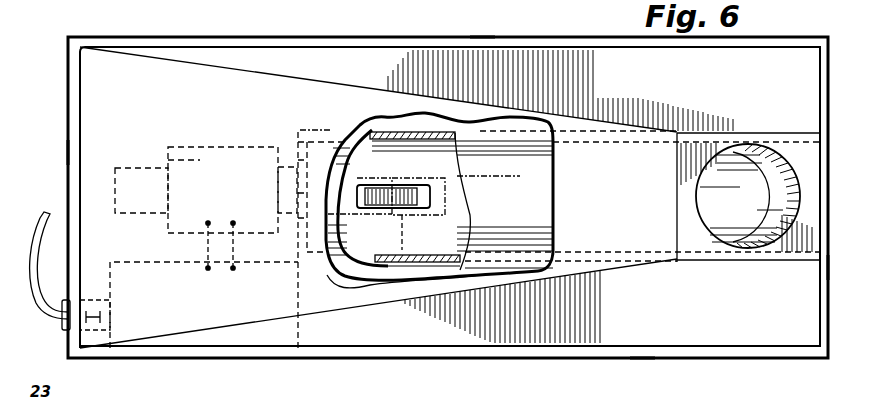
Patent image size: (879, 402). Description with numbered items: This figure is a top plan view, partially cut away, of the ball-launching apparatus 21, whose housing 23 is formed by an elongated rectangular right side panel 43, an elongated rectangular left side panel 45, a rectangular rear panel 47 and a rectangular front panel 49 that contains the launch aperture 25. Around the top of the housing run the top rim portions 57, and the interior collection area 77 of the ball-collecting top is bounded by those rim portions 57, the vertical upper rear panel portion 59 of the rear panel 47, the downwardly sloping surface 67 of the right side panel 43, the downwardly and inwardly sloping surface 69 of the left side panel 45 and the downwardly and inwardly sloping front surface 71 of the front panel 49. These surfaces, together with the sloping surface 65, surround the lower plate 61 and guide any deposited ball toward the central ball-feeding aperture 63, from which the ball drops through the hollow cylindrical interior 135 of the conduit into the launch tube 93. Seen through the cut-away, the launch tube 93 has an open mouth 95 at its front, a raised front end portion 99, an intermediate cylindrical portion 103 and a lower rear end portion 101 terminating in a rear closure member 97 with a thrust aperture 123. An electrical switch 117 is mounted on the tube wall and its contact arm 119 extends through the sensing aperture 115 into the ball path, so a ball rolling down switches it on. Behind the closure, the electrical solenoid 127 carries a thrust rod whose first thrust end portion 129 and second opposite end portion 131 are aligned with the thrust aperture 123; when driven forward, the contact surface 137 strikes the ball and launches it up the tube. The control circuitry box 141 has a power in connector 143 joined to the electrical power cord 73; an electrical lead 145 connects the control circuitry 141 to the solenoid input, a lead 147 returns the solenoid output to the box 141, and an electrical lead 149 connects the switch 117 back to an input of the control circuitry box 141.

The ball-launching apparatus 21 is at (58, 61).
The housing 23 is at (67, 130).
The launch aperture 25 is at (837, 237).
The right side panel 43 is at (481, 38).
The left side panel 45 is at (642, 357).
The rear panel 47 is at (68, 153).
The front panel 49 is at (828, 265).
The top rim portion 57 is at (166, 45).
The vertical upper rear panel portion 59 is at (81, 133).
The lower plate 61 is at (812, 133).
The ball-feeding aperture 63 is at (735, 174).
The sloping surface 65 is at (222, 115).
The downwardly sloping surface of right side panel 67 is at (623, 97).
The downwardly and inwardly sloping surface of left side panel 69 is at (618, 320).
The downwardly and inwardly sloping front surface 71 is at (820, 307).
The electrical power cord 73 is at (48, 257).
The interior collection area 77 is at (782, 72).
The launch tube 93 is at (528, 198).
The open mouth 95 is at (827, 187).
The rear closure member 97 is at (297, 262).
The raised front end portion 99 is at (700, 262).
The lower rear end portion 101 is at (350, 272).
The intermediate cylindrical portion 103 is at (505, 256).
The sensing aperture 115 is at (394, 198).
The electrical switch 117 is at (405, 230).
The contact arm 119 is at (383, 185).
The thrust aperture 123 is at (310, 142).
The electrical solenoid 127 is at (178, 145).
The first thrust end portion 129 is at (284, 146).
The second opposite end portion 131 is at (140, 218).
The hollow cylindrical interior of conduit 135 is at (742, 232).
The contact surface 137 is at (308, 195).
The control circuitry box 141 is at (306, 332).
The power in connector 143 is at (78, 332).
The electrical lead 145 is at (207, 246).
The lead 147 is at (234, 246).
The electrical lead 149 is at (384, 272).